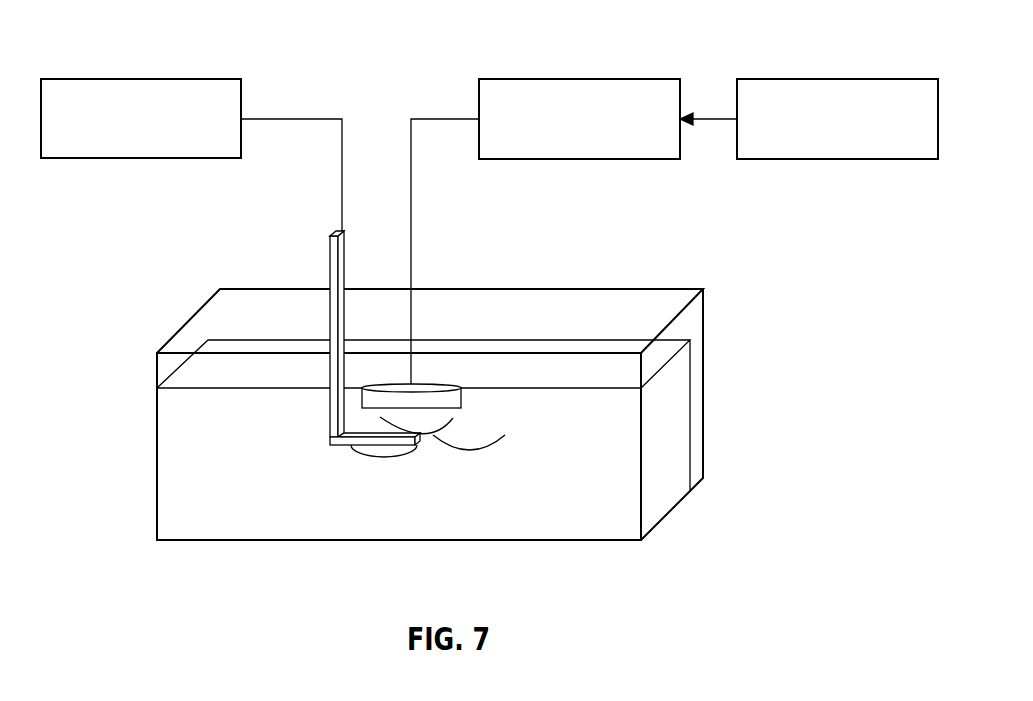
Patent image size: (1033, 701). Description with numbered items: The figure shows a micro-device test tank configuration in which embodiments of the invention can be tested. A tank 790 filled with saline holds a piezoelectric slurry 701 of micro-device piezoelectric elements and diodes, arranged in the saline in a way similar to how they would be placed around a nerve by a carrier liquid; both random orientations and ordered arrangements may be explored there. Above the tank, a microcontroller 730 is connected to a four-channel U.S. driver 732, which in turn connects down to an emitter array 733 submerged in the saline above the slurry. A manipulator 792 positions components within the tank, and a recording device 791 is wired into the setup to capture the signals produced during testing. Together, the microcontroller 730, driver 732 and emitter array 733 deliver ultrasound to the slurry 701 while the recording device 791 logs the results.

The piezoelectric slurry 701 is at (388, 455).
The microcontroller 730 is at (868, 79).
The 4-channel U.S. driver 732 is at (550, 79).
The emitter array 733 is at (442, 398).
The tank 790 is at (351, 553).
The recording device 791 is at (118, 79).
The manipulator 792 is at (253, 290).